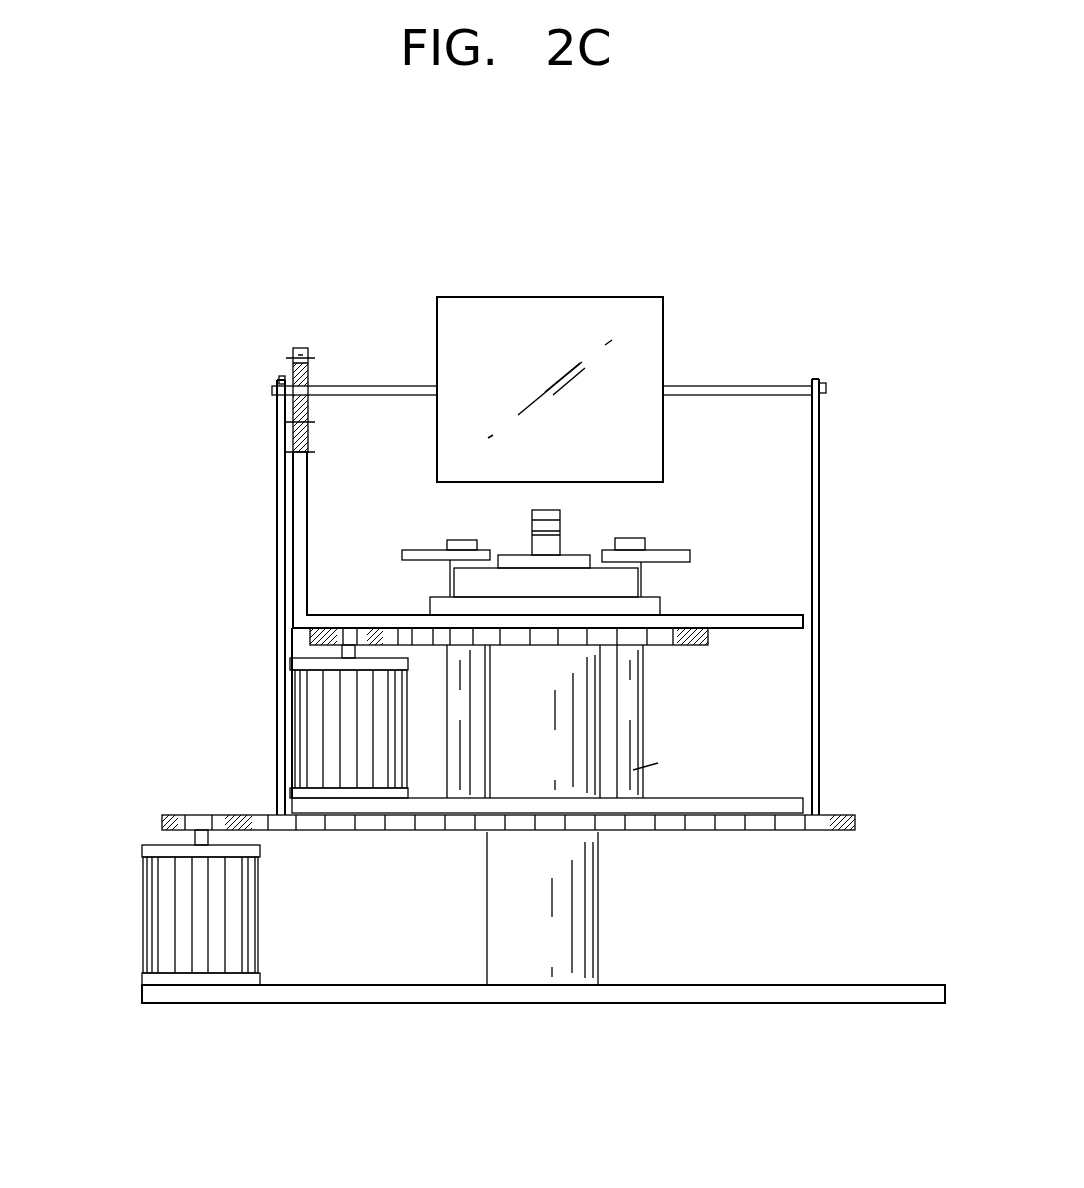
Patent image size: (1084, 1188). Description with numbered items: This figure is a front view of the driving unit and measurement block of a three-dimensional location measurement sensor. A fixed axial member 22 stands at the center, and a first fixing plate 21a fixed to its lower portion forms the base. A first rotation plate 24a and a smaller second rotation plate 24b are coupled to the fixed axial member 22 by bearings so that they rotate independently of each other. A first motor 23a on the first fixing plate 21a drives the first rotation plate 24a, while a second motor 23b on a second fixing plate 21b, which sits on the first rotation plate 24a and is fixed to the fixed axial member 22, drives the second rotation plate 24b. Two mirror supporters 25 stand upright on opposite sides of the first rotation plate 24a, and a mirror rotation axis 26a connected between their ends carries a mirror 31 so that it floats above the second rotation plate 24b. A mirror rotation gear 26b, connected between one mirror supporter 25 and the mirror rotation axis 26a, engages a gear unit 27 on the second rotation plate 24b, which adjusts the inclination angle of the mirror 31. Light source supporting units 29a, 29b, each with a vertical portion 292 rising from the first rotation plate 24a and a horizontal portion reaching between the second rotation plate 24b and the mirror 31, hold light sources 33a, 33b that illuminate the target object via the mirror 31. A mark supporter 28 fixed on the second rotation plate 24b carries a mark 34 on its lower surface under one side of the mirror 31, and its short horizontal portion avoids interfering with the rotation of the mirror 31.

The first fixing plate 21a is at (921, 985).
The second fixing plate 21b is at (774, 810).
The fixed axial member 22 is at (587, 917).
The first motor 23a is at (155, 915).
The second motor 23b is at (305, 726).
The first rotation plate 24a is at (818, 832).
The second rotation plate 24b is at (665, 640).
The mirror supporter 25 is at (817, 502).
The mirror rotation axis 26a is at (738, 388).
The mirror rotation gear 26b is at (300, 350).
The gear unit 27 is at (300, 515).
The mark supporter 28 is at (530, 547).
The light source supporting unit 29a is at (410, 560).
The light source supporting unit 29b is at (680, 557).
The mirror 31 is at (549, 310).
The light source 33a is at (460, 545).
The light source 33b is at (638, 545).
The mark 34 is at (552, 530).
The vertical portion 292 is at (667, 762).